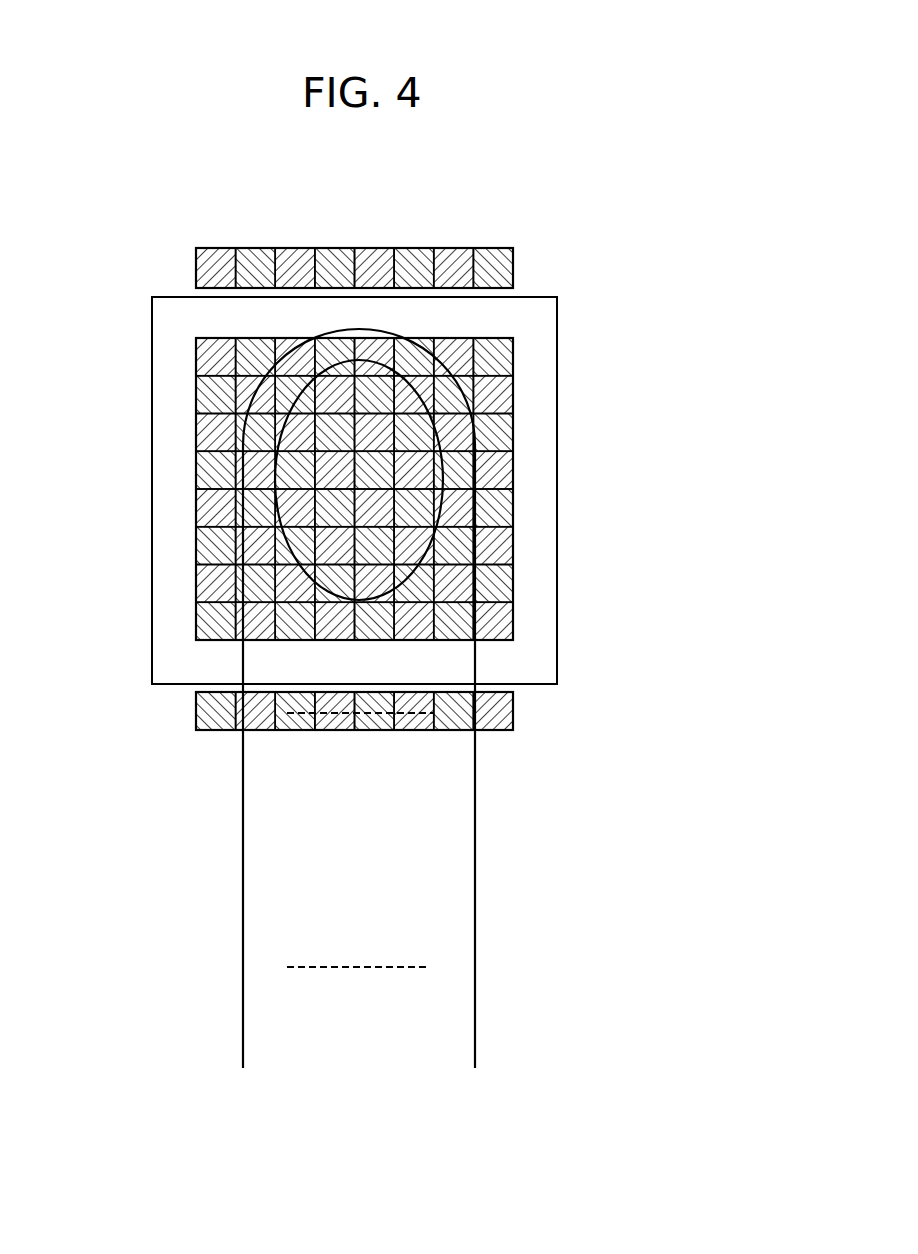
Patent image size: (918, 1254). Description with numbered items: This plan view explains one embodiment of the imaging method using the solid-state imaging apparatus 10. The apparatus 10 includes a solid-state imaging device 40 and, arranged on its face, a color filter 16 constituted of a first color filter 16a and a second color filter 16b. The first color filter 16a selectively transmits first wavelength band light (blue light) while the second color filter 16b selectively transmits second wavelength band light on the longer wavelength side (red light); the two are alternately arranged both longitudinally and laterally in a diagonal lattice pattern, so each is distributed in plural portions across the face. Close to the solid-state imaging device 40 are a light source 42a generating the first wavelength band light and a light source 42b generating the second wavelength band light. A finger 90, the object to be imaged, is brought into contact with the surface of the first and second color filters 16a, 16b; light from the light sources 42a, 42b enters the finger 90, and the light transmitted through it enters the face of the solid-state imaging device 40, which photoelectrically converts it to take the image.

The solid-state imaging apparatus 10 is at (653, 194).
The color filter 16 is at (647, 238).
The first color filter 16a is at (498, 337).
The second color filter 16b is at (455, 340).
The solid-state imaging device 40 is at (557, 570).
The light source 42a is at (196, 272).
The light source 42b is at (196, 712).
The finger 90 is at (465, 880).